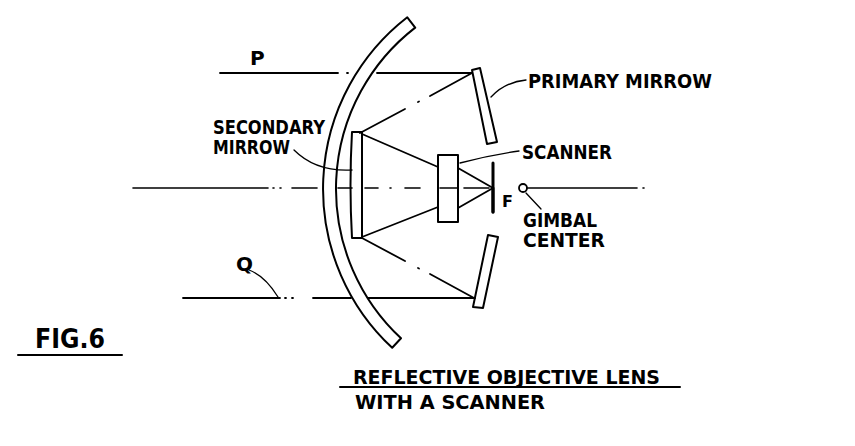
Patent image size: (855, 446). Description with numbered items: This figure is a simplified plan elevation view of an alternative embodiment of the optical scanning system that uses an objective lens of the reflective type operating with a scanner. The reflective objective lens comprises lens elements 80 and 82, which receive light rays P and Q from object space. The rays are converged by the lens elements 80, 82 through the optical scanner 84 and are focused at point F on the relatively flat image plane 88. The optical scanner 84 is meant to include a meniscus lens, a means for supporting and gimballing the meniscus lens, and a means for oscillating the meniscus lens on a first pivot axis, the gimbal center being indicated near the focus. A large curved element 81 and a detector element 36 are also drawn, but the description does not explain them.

The lens element 80 is at (490, 95).
The curved window / corrector shell 81 is at (383, 47).
The lens element 82 is at (360, 132).
The optical scanner 84 is at (447, 175).
The image plane 88 is at (496, 173).
The detector 36 is at (492, 199).